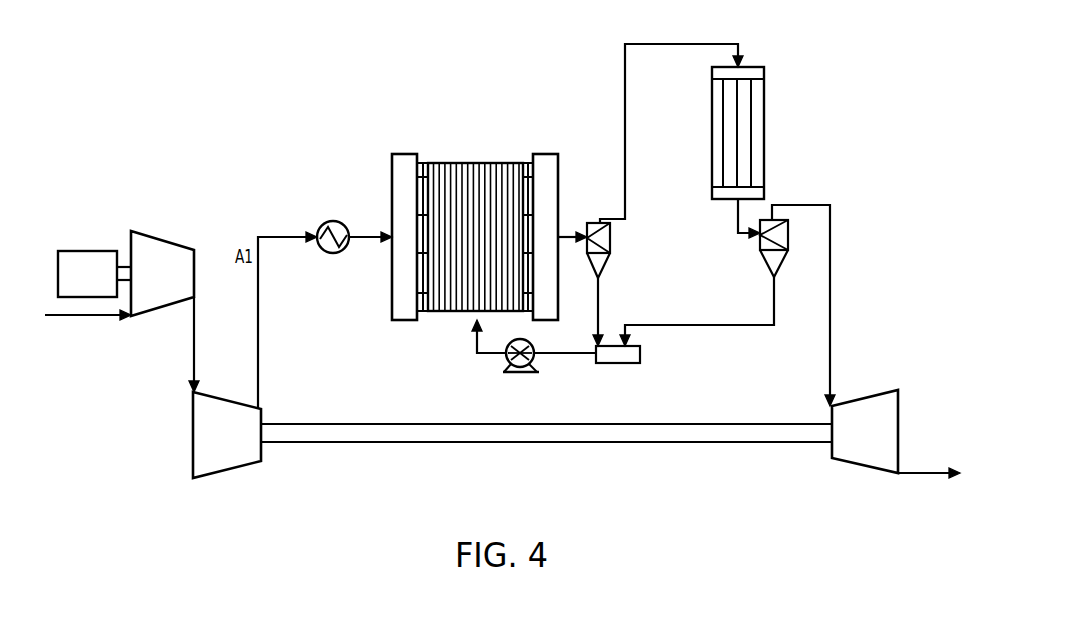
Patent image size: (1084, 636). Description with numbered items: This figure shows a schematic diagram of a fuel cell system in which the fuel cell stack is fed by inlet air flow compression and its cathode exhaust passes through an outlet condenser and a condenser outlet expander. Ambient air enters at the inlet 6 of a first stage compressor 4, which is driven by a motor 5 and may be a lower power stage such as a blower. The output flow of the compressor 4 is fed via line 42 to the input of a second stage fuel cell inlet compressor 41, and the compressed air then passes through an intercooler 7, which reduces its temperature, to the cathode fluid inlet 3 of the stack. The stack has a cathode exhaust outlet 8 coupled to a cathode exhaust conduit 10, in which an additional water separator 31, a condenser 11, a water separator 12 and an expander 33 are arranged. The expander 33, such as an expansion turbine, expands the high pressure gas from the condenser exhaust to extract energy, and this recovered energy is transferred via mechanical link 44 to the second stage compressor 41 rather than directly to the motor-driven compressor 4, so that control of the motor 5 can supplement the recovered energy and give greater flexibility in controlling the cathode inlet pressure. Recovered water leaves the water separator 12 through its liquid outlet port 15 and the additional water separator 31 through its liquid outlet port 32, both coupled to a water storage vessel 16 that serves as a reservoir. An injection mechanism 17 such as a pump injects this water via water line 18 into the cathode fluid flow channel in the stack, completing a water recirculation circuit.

The cathode fluid inlet 3 is at (366, 243).
The compressor 4 is at (162, 236).
The motor 5 is at (95, 250).
The inlet 6 is at (101, 317).
The intercooler 7 is at (331, 222).
The cathode exhaust outlet 8 is at (569, 242).
The cathode exhaust conduit 10 is at (623, 93).
The condenser 11 is at (766, 103).
The water separator 12 is at (788, 238).
The liquid outlet port 15 is at (773, 281).
The water storage vessel 16 is at (646, 358).
The injection mechanism 17 is at (523, 373).
The water line 18 is at (472, 342).
The additional water separator 31 is at (612, 243).
The liquid outlet port 32 is at (604, 276).
The expander 33 is at (862, 397).
The second stage fuel cell inlet compressor 41 is at (222, 466).
The line 42 is at (193, 341).
The mechanical link 44 is at (535, 444).